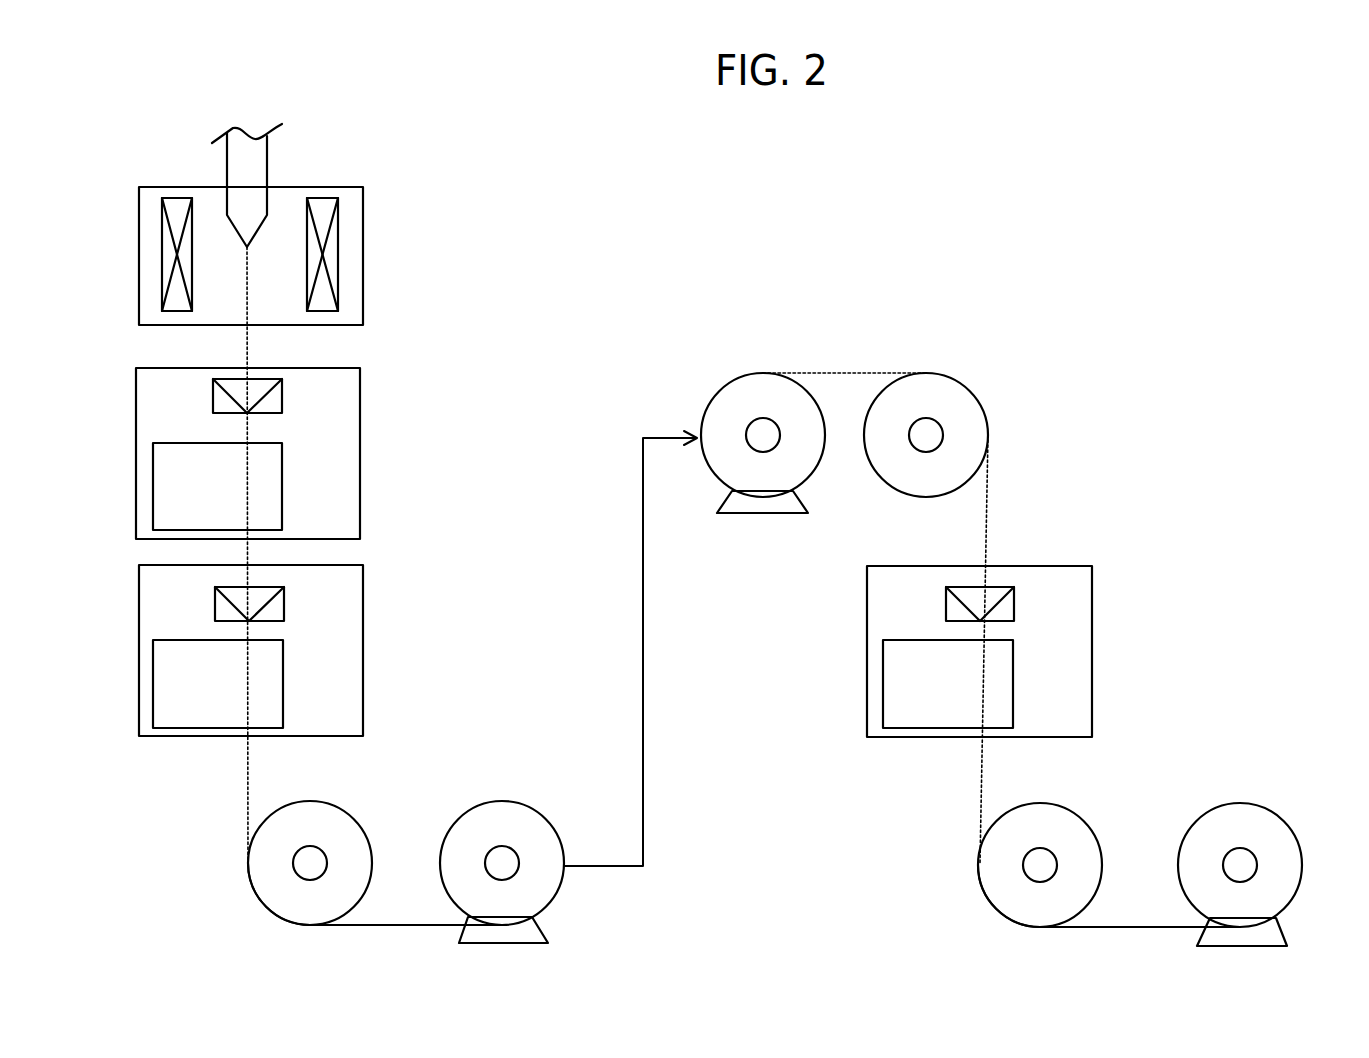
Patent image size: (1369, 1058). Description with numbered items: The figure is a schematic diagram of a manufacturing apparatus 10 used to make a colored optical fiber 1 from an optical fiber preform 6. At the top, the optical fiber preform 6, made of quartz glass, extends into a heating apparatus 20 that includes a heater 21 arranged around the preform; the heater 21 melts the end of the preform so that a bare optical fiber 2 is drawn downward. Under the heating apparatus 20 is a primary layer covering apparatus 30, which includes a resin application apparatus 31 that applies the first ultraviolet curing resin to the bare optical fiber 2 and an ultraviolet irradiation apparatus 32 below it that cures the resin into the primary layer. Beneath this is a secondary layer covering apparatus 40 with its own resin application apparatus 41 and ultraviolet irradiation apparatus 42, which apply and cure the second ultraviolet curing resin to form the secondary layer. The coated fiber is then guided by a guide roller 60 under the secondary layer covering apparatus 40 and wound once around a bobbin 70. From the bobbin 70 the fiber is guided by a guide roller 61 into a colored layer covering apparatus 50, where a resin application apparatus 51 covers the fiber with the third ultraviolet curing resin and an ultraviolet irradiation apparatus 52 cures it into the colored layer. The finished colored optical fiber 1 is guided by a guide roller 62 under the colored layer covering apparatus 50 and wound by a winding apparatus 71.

The manufacturing apparatus 10 is at (1177, 197).
The optical fiber preform 6 is at (267, 160).
The heating apparatus 20 is at (363, 253).
The heater 21 is at (338, 222).
The bare optical fiber 2 is at (248, 353).
The primary layer covering apparatus 30 is at (360, 443).
The resin application apparatus 31 is at (282, 397).
The ultraviolet irradiation apparatus 32 is at (282, 490).
The secondary layer covering apparatus 40 is at (363, 648).
The resin application apparatus 41 is at (284, 600).
The ultraviolet irradiation apparatus 42 is at (283, 695).
The colored layer covering apparatus 50 is at (1092, 643).
The resin application apparatus 51 is at (1014, 600).
The ultraviolet irradiation apparatus 52 is at (1013, 686).
The guide roller 60 is at (352, 813).
The guide roller 61 is at (977, 395).
The guide roller 62 is at (1085, 820).
The bobbin 70 is at (542, 820).
The winding apparatus 71 is at (1285, 822).
The colored optical fiber 1 is at (985, 772).